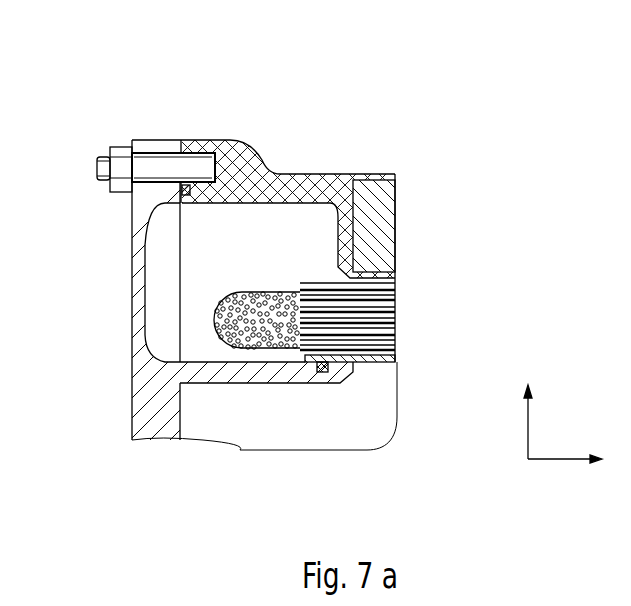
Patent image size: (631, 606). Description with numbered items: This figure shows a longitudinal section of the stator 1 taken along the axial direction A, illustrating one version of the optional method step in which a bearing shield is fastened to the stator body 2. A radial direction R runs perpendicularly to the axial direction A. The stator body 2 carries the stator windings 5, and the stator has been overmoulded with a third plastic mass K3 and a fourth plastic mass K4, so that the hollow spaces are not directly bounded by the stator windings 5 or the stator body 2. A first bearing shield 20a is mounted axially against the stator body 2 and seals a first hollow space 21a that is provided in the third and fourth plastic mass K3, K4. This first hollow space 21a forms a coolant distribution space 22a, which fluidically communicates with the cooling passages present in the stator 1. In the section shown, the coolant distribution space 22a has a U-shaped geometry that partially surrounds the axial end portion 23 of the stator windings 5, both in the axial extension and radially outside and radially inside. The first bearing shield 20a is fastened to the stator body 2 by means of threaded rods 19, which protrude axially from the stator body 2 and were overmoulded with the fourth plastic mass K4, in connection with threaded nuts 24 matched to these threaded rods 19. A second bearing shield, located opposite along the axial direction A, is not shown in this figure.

The stator 1 is at (500, 142).
The stator body 2 is at (382, 227).
The stator windings 5 is at (413, 327).
The threaded rods 19 is at (96, 169).
The first bearing shield 20a is at (150, 400).
The first hollow space 21a is at (222, 282).
The coolant distribution space 22a is at (300, 254).
The axial end portion of the stator windings 23 is at (250, 345).
The threaded nuts 24 is at (117, 147).
The third plastic mass K3 is at (237, 160).
The fourth plastic mass K4 is at (385, 176).
The radial direction R is at (528, 428).
The axial direction A is at (557, 460).